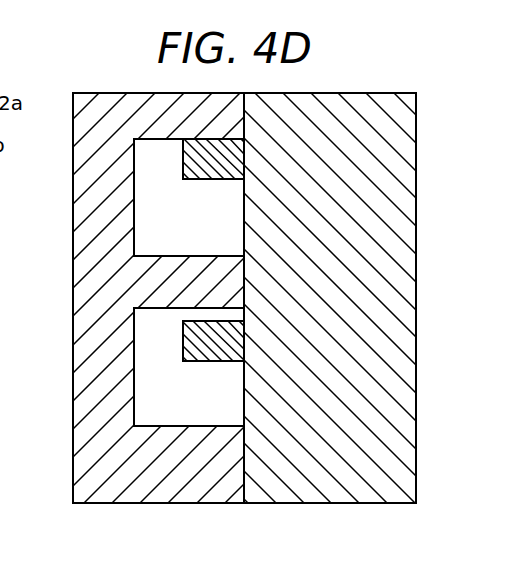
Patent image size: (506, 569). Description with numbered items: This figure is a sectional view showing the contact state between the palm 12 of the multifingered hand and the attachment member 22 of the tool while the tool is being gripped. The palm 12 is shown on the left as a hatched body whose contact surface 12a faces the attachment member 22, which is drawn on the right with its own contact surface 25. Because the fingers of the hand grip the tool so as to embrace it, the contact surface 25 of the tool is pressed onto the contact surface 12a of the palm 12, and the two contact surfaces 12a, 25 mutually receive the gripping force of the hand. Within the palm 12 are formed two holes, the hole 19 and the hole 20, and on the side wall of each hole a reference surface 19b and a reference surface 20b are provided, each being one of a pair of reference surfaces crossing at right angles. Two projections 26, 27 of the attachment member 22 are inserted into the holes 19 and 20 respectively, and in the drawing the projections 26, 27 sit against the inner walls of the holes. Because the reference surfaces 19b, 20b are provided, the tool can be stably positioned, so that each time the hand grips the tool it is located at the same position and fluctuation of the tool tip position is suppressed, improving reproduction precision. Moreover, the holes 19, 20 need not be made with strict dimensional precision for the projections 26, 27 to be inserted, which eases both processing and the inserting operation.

The palm 12 is at (157, 464).
The contact surface 12a is at (245, 467).
The hole 19 is at (157, 222).
The reference surface 19b is at (160, 140).
The hole 20 is at (157, 402).
The reference surface 20b is at (160, 309).
The attachment member 22 is at (330, 428).
The contact surface 25 is at (243, 442).
The projection 26 is at (228, 158).
The projection 27 is at (228, 338).